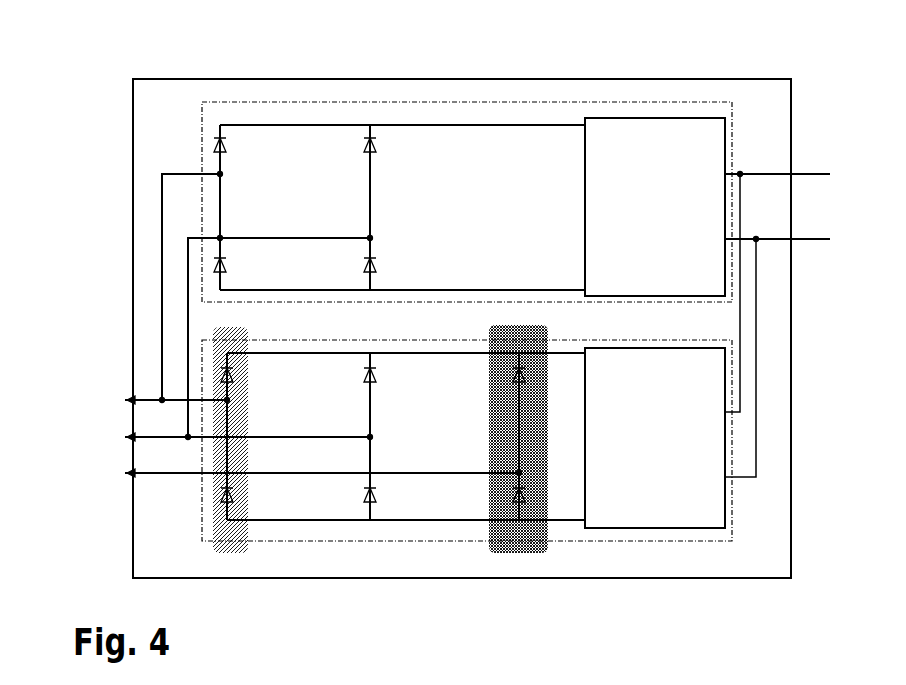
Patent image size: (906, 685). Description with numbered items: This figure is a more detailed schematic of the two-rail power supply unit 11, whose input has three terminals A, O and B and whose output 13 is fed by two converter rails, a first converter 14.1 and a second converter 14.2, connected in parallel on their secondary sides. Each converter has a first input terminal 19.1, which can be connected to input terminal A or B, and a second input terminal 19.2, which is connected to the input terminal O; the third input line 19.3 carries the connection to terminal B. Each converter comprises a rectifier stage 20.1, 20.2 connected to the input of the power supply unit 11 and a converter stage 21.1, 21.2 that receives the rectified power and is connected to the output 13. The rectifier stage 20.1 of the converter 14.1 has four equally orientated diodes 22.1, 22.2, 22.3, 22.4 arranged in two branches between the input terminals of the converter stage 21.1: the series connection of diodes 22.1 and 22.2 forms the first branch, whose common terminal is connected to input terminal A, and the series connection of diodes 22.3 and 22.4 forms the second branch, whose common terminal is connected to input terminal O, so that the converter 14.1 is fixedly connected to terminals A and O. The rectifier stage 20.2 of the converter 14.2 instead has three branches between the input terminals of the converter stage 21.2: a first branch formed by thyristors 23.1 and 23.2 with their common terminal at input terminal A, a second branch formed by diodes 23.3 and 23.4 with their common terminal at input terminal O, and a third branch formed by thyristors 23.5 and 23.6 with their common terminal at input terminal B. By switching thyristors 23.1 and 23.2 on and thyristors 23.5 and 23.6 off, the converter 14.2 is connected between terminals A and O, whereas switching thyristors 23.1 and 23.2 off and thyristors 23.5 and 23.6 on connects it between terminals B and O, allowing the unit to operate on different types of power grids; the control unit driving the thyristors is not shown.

The two-rail power supply unit 11 is at (737, 79).
The output 13 is at (778, 325).
The converter 14.1 is at (630, 100).
The converter 14.2 is at (658, 543).
The first input terminal 19.1 is at (170, 172).
The second input terminal 19.2 is at (196, 236).
The third phase input line 19.3 is at (176, 476).
The rectifier stage 20.1 is at (430, 125).
The rectifier stage 20.2 is at (416, 527).
The converter stage 21.1 is at (655, 207).
The converter stage 21.2 is at (655, 438).
The diode 22.1 is at (228, 144).
The diode 22.2 is at (228, 264).
The diode 22.3 is at (378, 144).
The diode 22.4 is at (378, 264).
The thyristor 23.1 is at (235, 374).
The thyristor 23.2 is at (235, 494).
The diode 23.3 is at (378, 374).
The diode 23.4 is at (378, 494).
The thyristor 23.5 is at (527, 374).
The thyristor 23.6 is at (527, 494).